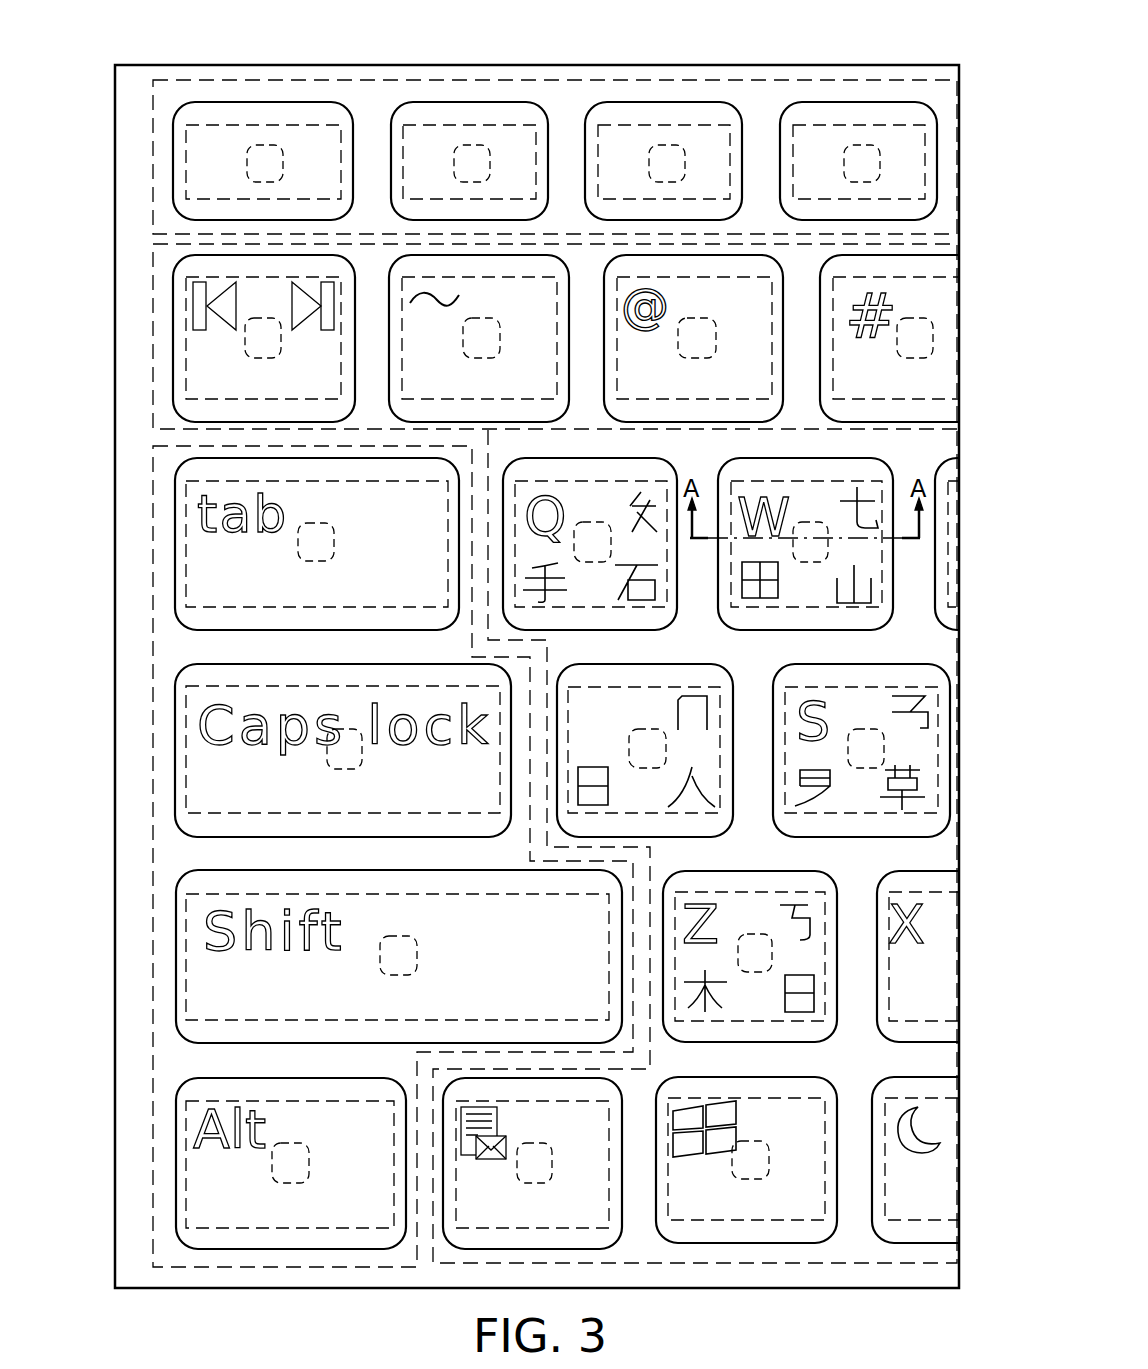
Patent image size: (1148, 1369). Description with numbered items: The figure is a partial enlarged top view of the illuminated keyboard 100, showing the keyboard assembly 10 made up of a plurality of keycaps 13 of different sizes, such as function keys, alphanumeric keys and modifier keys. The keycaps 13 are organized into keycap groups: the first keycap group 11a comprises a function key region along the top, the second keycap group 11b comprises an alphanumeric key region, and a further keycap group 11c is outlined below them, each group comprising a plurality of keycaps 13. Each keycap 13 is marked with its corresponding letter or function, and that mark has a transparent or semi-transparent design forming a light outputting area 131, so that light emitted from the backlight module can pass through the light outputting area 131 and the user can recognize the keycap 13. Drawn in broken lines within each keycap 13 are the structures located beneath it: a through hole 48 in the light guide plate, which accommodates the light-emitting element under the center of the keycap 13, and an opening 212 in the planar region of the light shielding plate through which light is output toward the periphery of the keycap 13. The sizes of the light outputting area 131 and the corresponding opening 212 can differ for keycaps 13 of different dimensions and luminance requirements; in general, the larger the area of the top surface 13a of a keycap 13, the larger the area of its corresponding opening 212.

The illuminated keyboard 100 is at (182, 26).
The keyboard assembly 10 is at (255, 65).
The first keycap group 11a is at (153, 172).
The second keycap group 11b is at (153, 338).
The keycap group 11c is at (152, 618).
The keycap 13 is at (623, 101).
The light outputting area 131 is at (651, 113).
The top surface 13a is at (700, 837).
The through hole 48 is at (644, 729).
The opening 212 is at (700, 685).